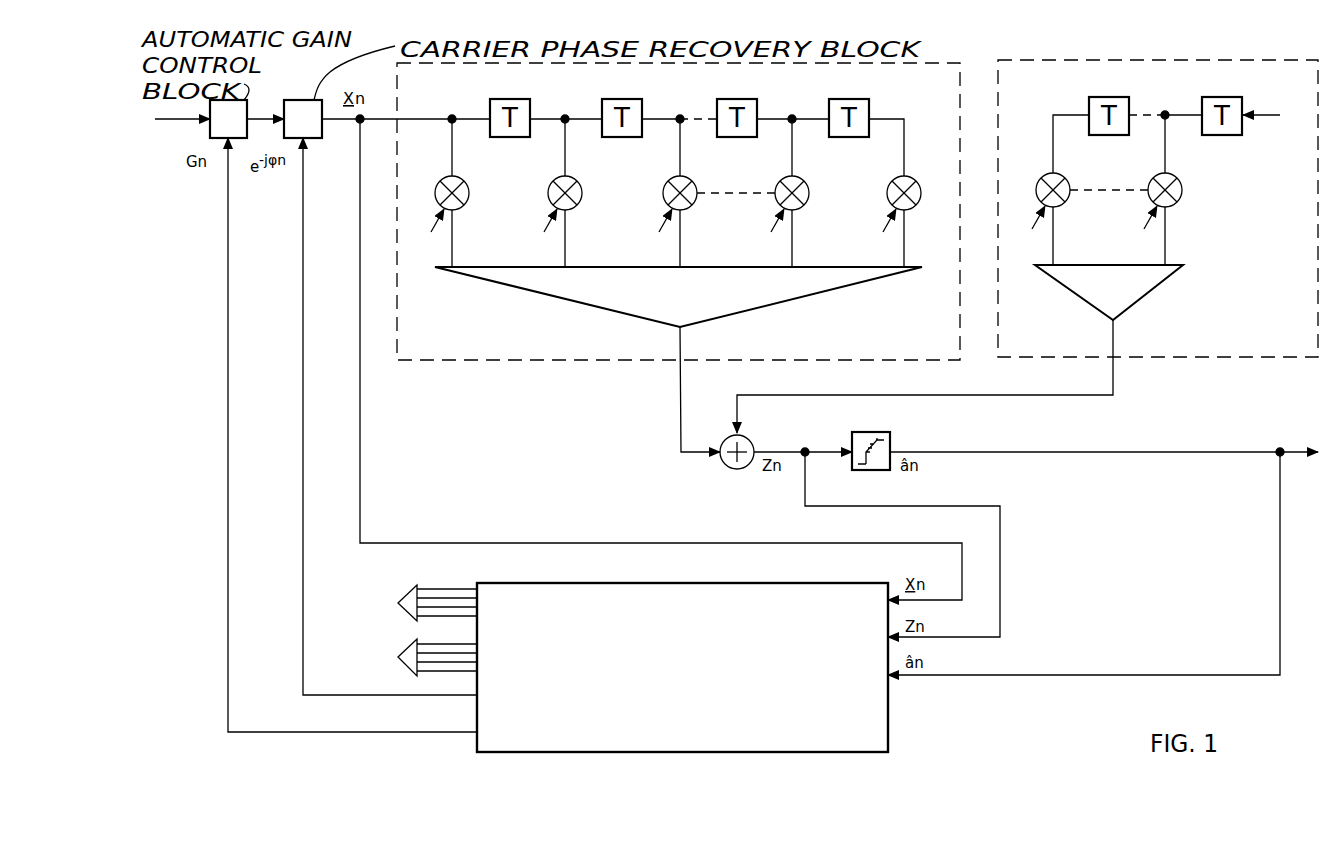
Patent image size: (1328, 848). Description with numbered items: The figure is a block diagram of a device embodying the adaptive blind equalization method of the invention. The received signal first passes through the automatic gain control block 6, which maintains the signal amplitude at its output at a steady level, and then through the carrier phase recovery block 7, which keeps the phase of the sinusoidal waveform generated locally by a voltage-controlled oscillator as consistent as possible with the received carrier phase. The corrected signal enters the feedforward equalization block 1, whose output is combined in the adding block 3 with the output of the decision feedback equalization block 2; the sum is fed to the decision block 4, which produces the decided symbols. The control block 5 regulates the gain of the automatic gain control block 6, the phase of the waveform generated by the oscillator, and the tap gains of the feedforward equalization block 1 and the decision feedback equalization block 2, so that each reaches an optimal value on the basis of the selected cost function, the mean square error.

The feedforward equalization block 1 is at (678, 211).
The decision feedback equalization block 2 is at (1158, 208).
The adding block 3 is at (724, 468).
The decision block 4 is at (893, 431).
The control block 5 is at (624, 667).
The automatic gain control block 6 is at (228, 119).
The carrier phase recovery block 7 is at (303, 119).